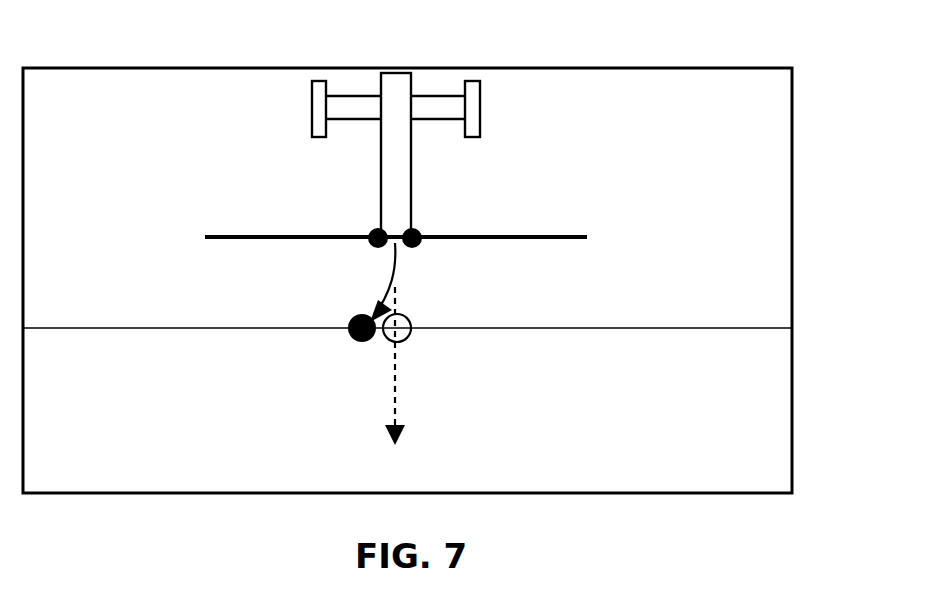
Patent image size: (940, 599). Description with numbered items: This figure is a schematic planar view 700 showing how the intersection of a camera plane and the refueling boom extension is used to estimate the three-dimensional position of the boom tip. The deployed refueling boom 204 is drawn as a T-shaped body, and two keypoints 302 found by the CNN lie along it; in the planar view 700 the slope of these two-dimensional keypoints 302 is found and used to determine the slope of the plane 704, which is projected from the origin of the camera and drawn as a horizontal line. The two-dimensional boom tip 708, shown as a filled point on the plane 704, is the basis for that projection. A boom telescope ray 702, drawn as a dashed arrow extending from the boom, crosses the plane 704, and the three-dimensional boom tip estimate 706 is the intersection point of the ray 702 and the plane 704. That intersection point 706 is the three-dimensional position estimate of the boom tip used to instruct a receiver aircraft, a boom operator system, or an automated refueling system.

The planar view 700 is at (814, 86).
The refueling boom 204 is at (427, 103).
The keypoints 302 is at (371, 230).
The boom telescope ray 702 is at (398, 367).
The plane 704 is at (698, 330).
The 3D boom tip estimate 706 is at (410, 318).
The boom tip 708 is at (356, 317).